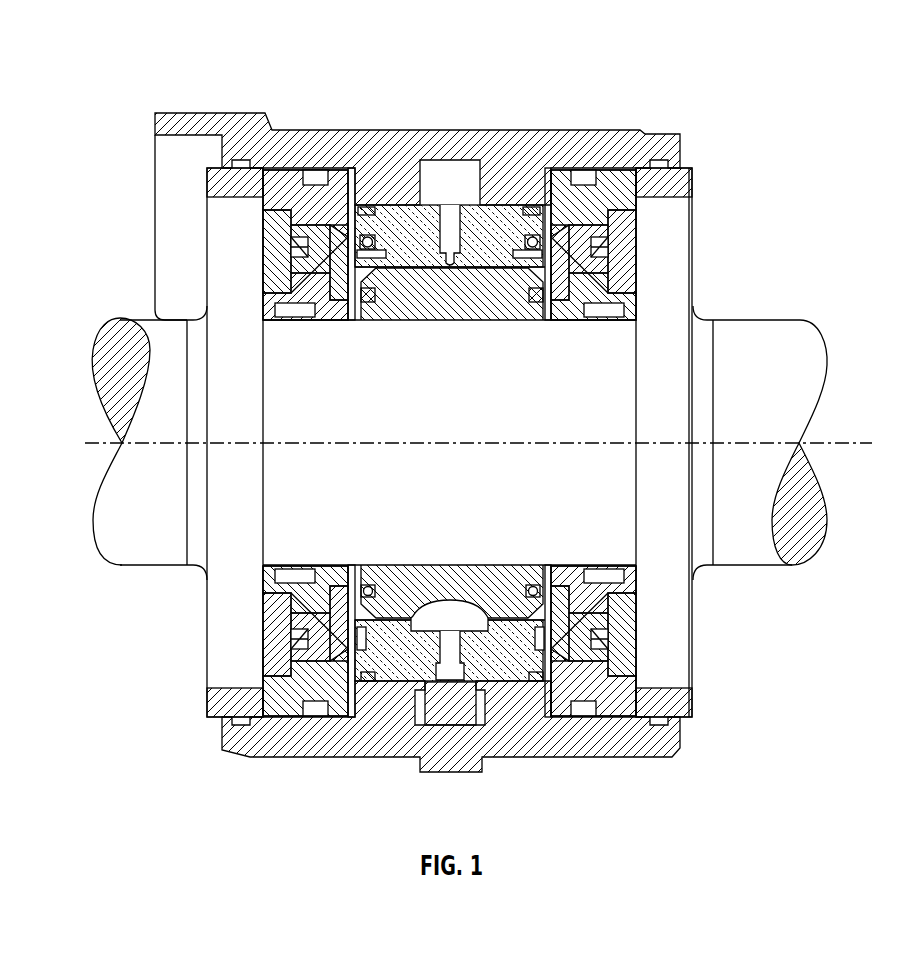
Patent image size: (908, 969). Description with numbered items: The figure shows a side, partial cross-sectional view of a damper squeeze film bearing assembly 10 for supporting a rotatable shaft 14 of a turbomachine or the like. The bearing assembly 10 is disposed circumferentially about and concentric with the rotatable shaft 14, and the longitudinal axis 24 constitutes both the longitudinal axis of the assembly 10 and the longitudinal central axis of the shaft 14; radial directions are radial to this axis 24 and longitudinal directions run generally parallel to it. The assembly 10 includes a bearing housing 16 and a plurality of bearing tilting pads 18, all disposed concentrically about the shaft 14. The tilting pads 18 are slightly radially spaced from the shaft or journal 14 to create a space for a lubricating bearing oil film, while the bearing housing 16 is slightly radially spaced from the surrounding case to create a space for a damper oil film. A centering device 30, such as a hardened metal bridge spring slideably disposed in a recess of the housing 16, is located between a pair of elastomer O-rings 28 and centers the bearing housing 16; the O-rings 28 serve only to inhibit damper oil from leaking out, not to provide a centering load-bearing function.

The damper squeeze film bearing assembly 10 is at (731, 109).
The rotatable shaft 14 is at (480, 412).
The bearing housing 16 is at (560, 130).
The bearing tilting pads 18 is at (406, 220).
The longitudinal axis 24 is at (853, 443).
The elastomer O-rings 28 is at (533, 682).
The centering device 30 is at (451, 713).